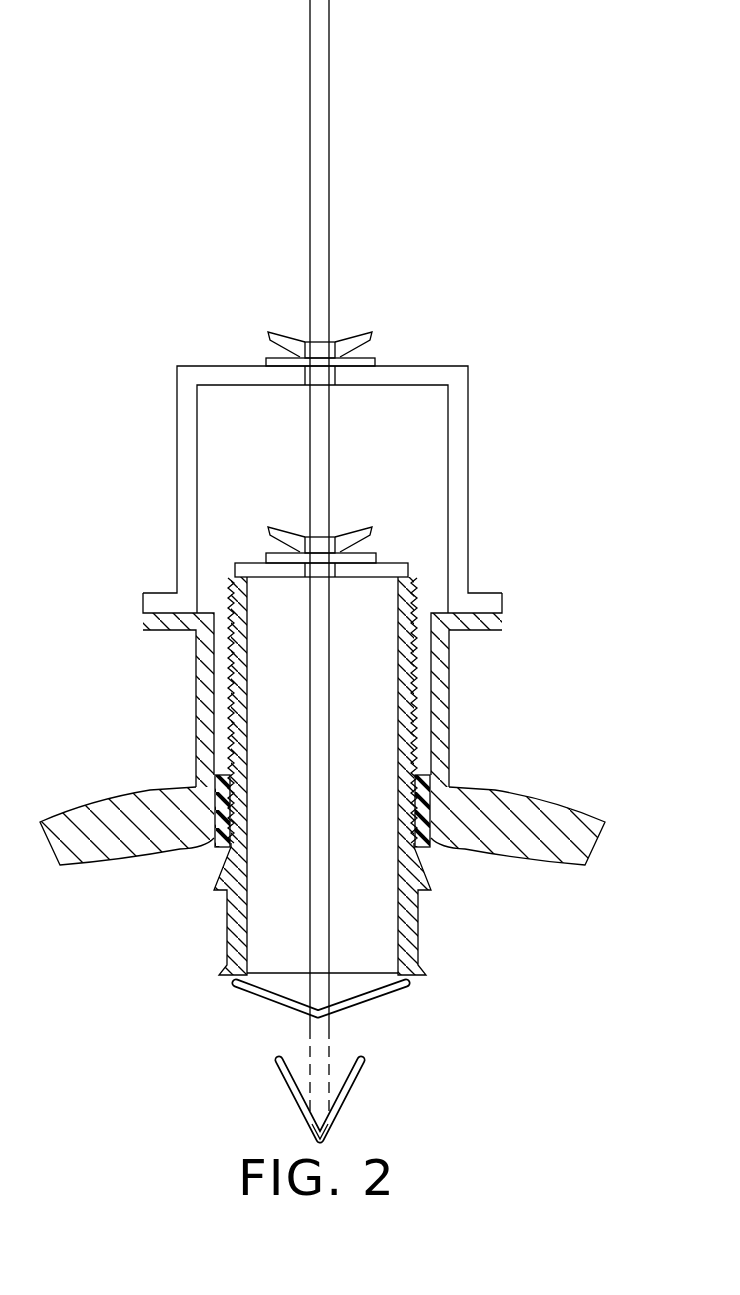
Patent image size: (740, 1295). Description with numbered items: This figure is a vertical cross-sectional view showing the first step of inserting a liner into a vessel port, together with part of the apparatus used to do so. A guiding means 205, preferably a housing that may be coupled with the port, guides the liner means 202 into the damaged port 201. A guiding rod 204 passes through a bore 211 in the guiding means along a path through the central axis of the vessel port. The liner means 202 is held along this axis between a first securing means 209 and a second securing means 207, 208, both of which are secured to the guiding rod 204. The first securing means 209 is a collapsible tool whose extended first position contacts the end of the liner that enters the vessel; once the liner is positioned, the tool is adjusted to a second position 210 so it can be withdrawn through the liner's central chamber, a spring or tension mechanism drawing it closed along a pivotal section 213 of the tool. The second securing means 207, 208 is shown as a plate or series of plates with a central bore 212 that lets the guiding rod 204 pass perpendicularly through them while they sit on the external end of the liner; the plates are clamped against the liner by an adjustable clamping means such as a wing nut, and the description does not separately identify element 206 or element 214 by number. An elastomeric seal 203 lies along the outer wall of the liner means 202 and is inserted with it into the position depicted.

The damaged port 201 is at (196, 776).
The liner means 202 is at (233, 577).
The elastomeric seal 203 is at (428, 847).
The guiding rod 204 is at (329, 210).
The guiding means 205 is at (468, 366).
The upper wing nut 206 is at (352, 335).
The second securing means 207 is at (360, 528).
The second securing means 208 is at (396, 557).
The first securing means 209 is at (388, 992).
The second position 210 is at (355, 1085).
The bore 211 is at (333, 385).
The central bore 212 is at (330, 575).
The pivotal section 213 is at (325, 1140).
The upper plate 214 is at (377, 358).